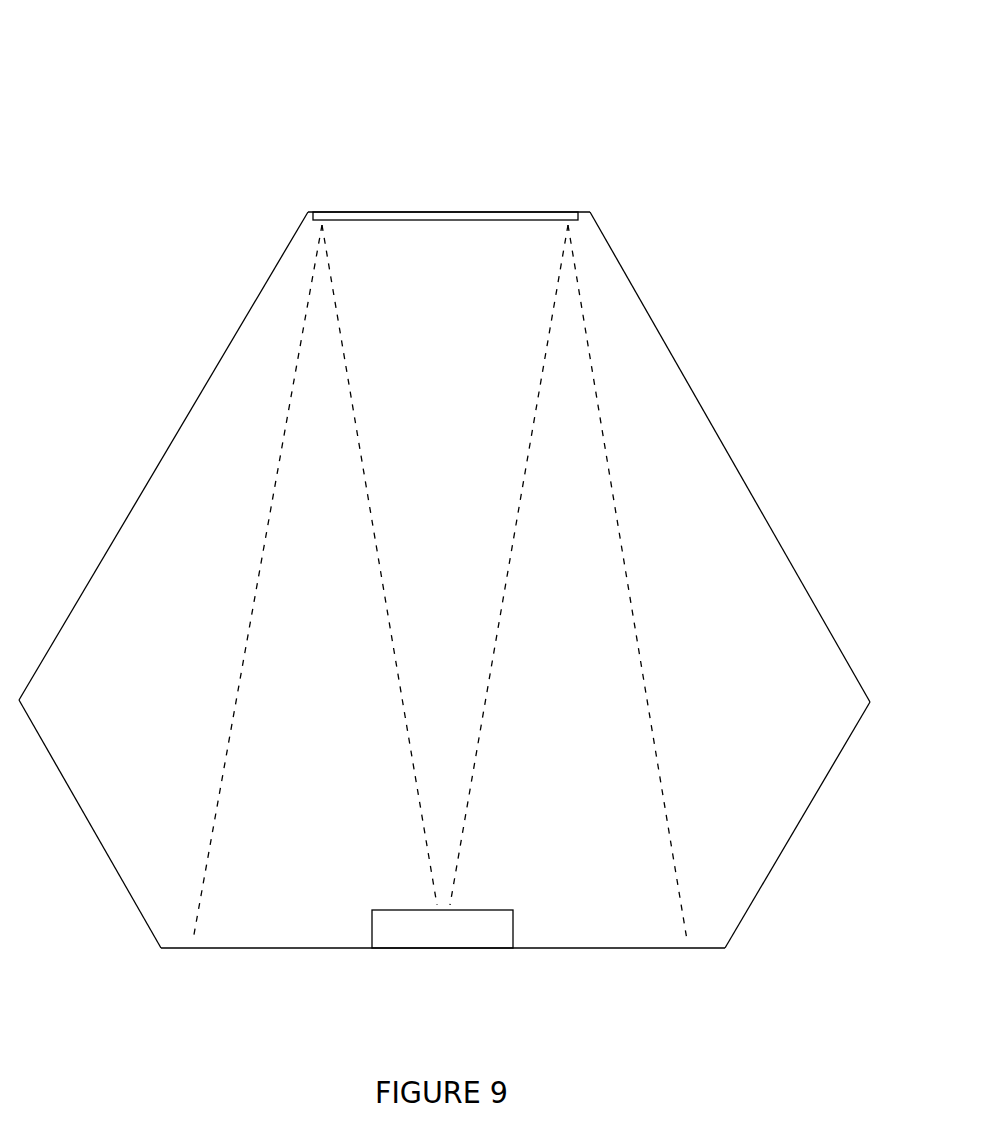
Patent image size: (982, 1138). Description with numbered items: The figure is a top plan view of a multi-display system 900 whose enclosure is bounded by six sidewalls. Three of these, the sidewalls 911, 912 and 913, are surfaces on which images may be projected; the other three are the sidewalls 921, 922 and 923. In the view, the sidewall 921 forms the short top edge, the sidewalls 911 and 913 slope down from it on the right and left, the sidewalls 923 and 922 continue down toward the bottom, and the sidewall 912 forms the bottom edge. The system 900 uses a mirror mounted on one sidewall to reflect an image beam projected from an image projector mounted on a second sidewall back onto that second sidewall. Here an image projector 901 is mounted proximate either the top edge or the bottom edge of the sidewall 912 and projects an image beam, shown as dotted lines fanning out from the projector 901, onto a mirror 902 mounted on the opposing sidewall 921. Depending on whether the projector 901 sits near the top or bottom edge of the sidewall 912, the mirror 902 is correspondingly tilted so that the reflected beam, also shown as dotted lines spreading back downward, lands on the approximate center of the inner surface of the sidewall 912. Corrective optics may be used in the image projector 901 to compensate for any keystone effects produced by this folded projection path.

The multi-display system 900 is at (451, 507).
The image projector 901 is at (515, 928).
The mirror 902 is at (411, 222).
The sidewall 911 is at (728, 447).
The sidewall 912 is at (265, 949).
The sidewall 913 is at (123, 519).
The sidewall 921 is at (480, 211).
The sidewall 922 is at (86, 821).
The sidewall 923 is at (833, 769).